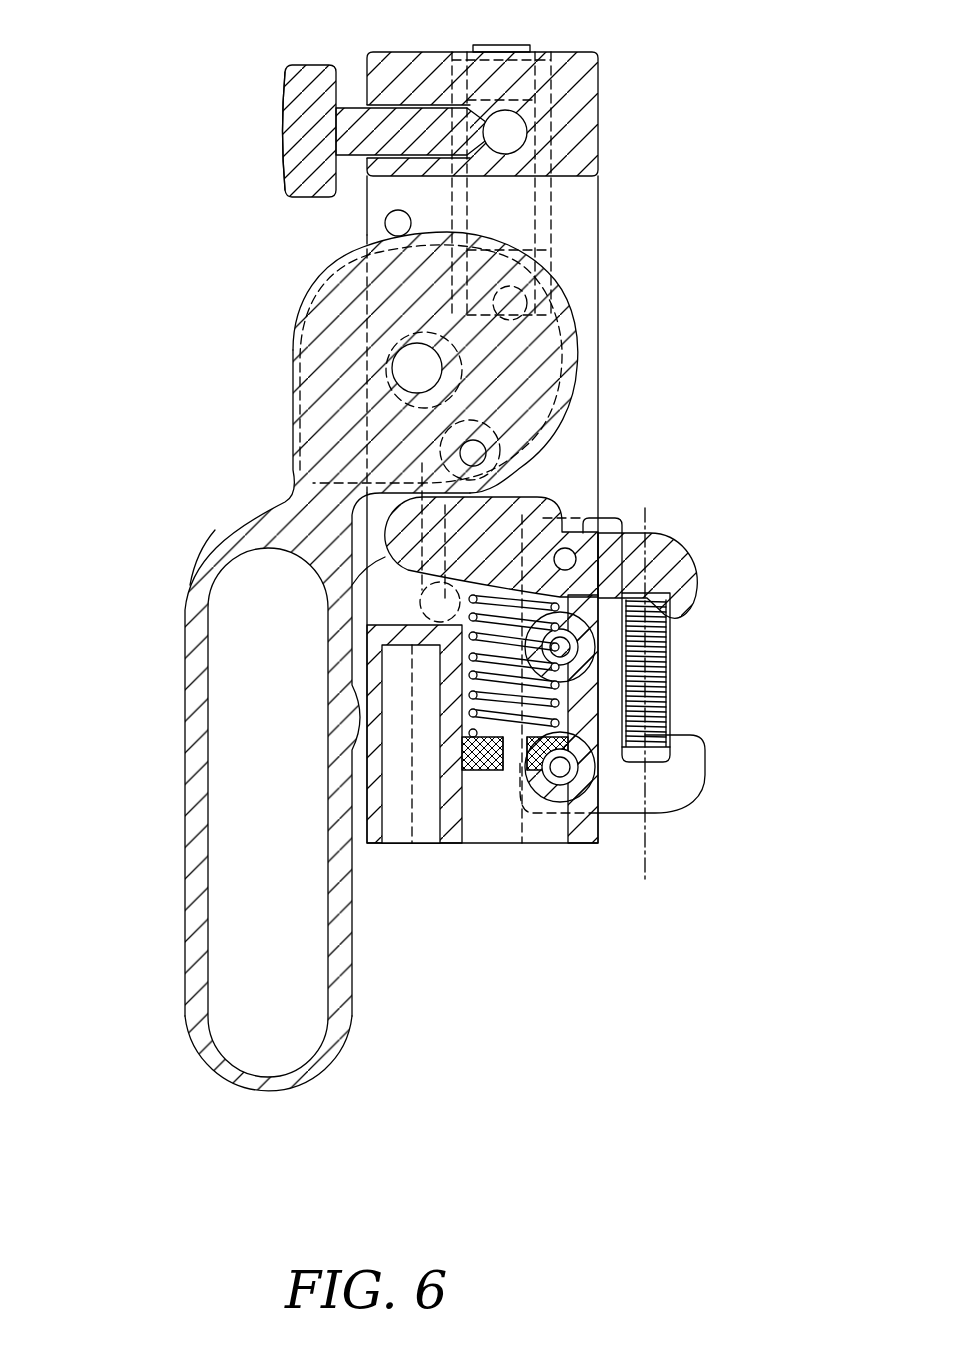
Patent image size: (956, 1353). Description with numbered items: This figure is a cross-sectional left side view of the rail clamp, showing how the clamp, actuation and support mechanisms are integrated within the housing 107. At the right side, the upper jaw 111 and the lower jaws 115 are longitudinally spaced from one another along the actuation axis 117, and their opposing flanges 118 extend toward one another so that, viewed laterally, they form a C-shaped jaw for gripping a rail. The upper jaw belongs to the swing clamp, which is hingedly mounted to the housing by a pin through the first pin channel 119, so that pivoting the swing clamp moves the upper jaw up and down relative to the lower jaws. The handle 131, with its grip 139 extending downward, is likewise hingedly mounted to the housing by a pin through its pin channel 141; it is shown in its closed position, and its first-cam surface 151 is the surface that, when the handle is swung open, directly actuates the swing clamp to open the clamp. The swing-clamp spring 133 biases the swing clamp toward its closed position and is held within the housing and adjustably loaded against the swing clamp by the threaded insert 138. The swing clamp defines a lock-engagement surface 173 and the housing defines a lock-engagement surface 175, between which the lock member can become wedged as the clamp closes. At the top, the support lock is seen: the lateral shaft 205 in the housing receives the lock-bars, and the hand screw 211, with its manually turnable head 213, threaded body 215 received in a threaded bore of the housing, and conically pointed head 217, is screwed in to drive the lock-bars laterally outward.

The housing 107 is at (592, 207).
The upper jaw 111 is at (680, 558).
The lower jaws 115 is at (698, 792).
The actuation axis 117 is at (647, 856).
The flanges 118 is at (694, 610).
The first pin channel 119 is at (565, 548).
The handle 131 is at (285, 501).
The swing-clamp spring 133 is at (470, 677).
The threaded insert 138 is at (494, 772).
The grip 139 is at (196, 983).
The pin channel 141 is at (392, 372).
The first-cam surface 151 is at (580, 382).
The lock-engagement surface 173 is at (331, 585).
The lock-engagement surface 175 is at (400, 625).
The lateral shaft 205 is at (514, 129).
The hand screw 211 is at (305, 78).
The head 213 is at (300, 168).
The threaded body 215 is at (412, 115).
The pointed head 217 is at (470, 123).